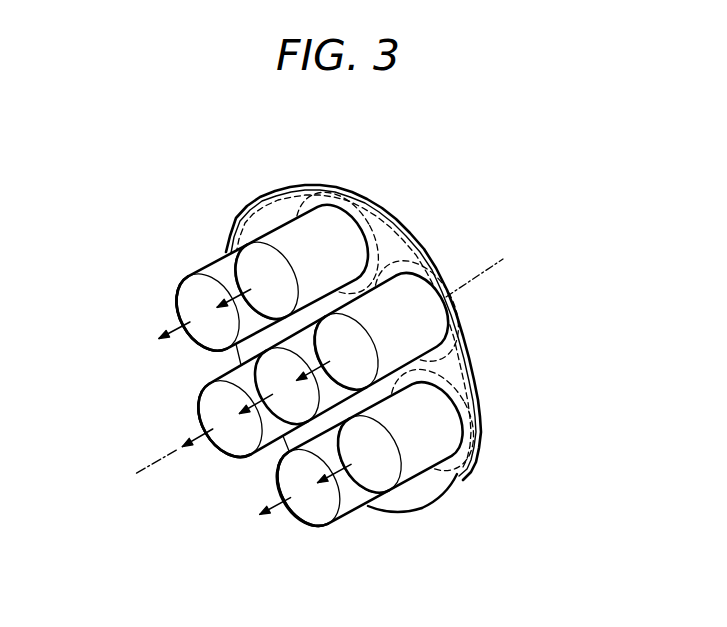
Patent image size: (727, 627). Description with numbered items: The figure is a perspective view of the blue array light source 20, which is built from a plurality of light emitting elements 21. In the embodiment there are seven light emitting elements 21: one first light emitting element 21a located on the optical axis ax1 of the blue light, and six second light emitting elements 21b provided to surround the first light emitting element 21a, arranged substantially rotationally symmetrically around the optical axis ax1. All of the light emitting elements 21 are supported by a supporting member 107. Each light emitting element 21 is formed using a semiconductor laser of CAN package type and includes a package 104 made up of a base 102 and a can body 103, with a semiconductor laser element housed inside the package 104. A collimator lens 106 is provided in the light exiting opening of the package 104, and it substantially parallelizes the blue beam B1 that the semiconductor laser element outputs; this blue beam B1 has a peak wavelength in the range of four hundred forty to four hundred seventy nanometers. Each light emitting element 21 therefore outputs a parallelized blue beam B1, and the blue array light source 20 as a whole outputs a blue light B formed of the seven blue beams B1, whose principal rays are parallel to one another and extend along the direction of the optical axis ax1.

The blue array light source 20 is at (429, 352).
The light emitting element 21 is at (276, 327).
The first light emitting element 21a is at (302, 335).
The second light emitting element 21b is at (190, 262).
The base 102 is at (564, 208).
The can body 103 is at (407, 292).
The package 104 is at (429, 332).
The collimator lens 106 is at (375, 483).
The supporting member 107 is at (440, 485).
The blue light B is at (157, 328).
The blue beam B1 is at (235, 300).
The optical axis ax1 is at (146, 472).